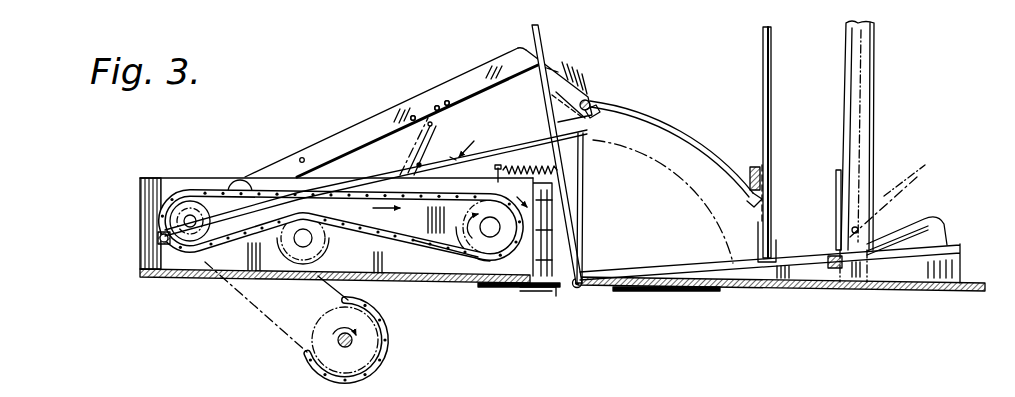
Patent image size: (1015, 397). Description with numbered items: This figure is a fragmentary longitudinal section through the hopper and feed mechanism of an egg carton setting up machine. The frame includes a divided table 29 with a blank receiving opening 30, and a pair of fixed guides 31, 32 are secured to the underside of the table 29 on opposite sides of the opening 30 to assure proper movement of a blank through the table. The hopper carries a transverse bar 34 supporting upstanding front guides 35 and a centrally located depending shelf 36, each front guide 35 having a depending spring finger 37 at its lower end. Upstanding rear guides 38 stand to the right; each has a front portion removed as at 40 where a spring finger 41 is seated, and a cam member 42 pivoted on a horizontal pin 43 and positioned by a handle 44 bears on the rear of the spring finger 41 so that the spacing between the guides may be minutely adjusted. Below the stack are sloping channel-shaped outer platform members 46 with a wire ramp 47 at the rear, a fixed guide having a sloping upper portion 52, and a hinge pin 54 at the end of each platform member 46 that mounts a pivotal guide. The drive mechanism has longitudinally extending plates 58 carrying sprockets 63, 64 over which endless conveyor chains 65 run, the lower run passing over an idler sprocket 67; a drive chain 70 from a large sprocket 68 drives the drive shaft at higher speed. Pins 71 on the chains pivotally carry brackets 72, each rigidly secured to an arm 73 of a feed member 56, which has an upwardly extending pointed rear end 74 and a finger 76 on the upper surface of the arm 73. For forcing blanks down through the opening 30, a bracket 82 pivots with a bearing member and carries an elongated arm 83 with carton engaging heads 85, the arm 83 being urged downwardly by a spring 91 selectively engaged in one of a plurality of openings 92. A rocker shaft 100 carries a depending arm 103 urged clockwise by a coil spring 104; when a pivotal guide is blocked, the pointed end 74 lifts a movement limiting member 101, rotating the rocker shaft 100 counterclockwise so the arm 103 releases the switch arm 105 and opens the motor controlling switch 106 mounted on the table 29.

The divided table 29 is at (140, 275).
The blank receiving passage or opening 30 is at (555, 296).
The fixed guide 31 is at (468, 292).
The fixed guide 32 is at (640, 292).
The transverse bar 34 is at (748, 165).
The front guide 35 is at (770, 98).
The depending shelf 36 is at (774, 224).
The spring finger 37 is at (750, 201).
The rear guide 38 is at (873, 128).
The removed front portion 40 is at (848, 203).
The spring finger 41 is at (838, 182).
The cam member 42 is at (850, 231).
The horizontal pin 43 is at (857, 257).
The handle 44 is at (888, 229).
The outer platform member 46 is at (953, 270).
The wire ramp 47 is at (946, 224).
The sloping upper portion 52 is at (545, 38).
The hinge pin 54 is at (580, 279).
The feed member 56 is at (469, 140).
The longitudinally extending plate 58 is at (164, 178).
The sprocket 63 is at (188, 184).
The sprocket 64 is at (470, 246).
The endless conveyor chain 65 is at (427, 247).
The idler sprocket 67 is at (326, 246).
The large sprocket 68 is at (362, 360).
The drive chain 70 is at (320, 370).
The pin 71 is at (160, 239).
The bracket 72 is at (180, 264).
The arm 73 is at (398, 176).
The pointed rear end 74 is at (594, 114).
The finger 76 is at (444, 150).
The bracket 82 is at (276, 163).
The elongated arm 83 is at (376, 126).
The carton engaging head 85 is at (565, 69).
The spring 91 is at (430, 125).
The openings 92 is at (432, 112).
The rocker shaft 100 is at (586, 100).
The movement limiting member 101 is at (686, 100).
The depending arm 103 is at (586, 160).
The coil spring 104 is at (527, 152).
The switch arm 105 is at (528, 233).
The motor controlling switch 106 is at (506, 186).